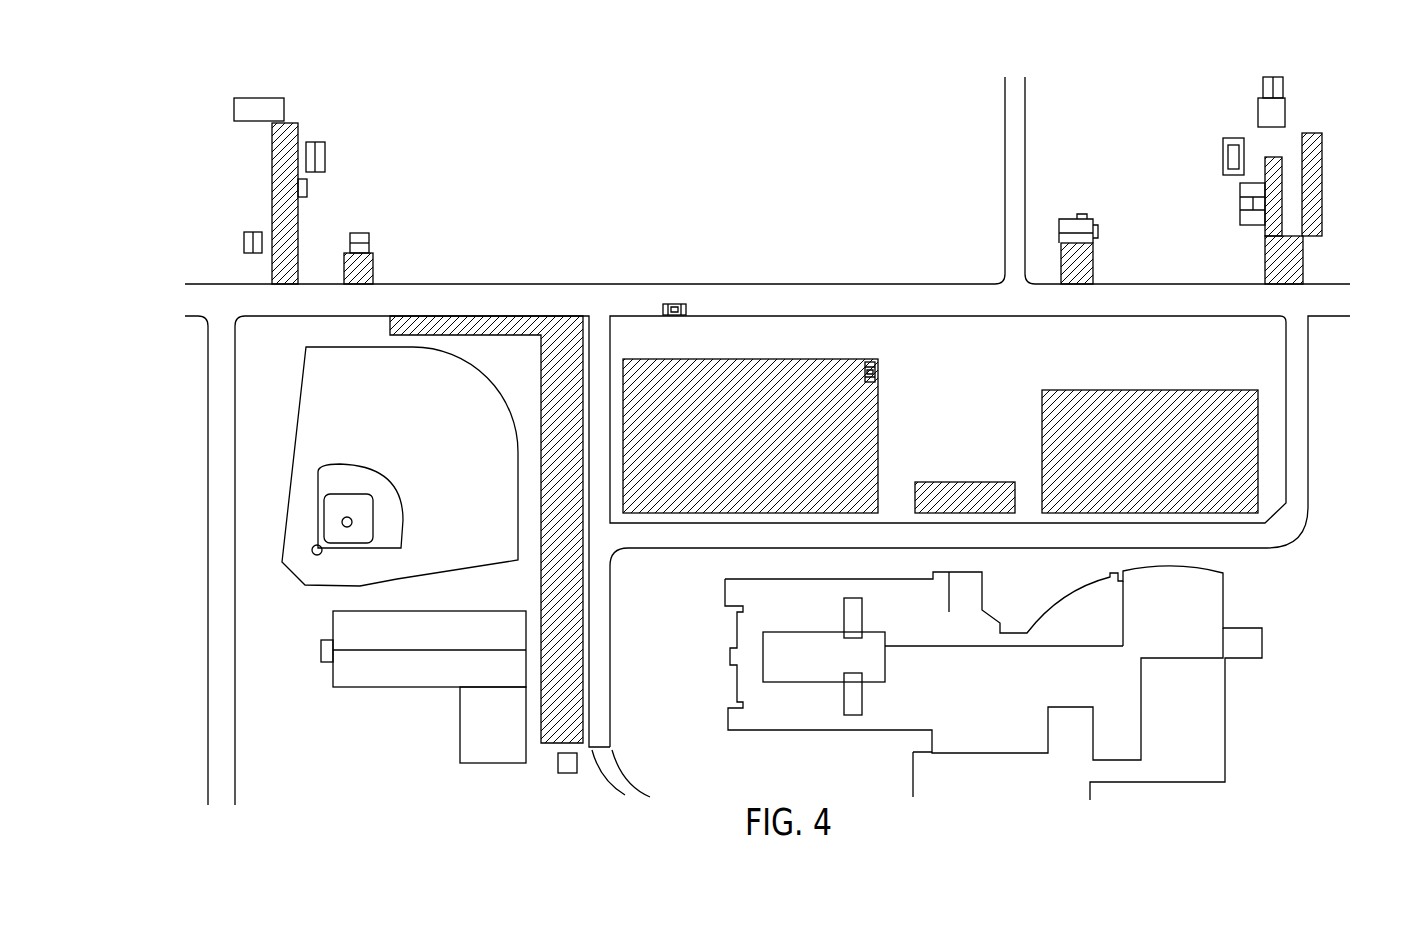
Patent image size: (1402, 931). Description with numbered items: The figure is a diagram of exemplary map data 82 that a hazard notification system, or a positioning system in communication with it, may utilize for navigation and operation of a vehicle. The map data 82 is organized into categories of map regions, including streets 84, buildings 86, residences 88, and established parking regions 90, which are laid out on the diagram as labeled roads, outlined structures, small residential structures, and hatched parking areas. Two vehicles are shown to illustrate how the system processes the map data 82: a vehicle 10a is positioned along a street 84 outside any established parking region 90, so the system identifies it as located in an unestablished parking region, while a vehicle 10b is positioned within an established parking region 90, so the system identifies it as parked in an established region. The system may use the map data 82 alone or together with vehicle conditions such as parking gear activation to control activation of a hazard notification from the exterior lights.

The map data 82 is at (1103, 58).
The streets 84 is at (1020, 212).
The buildings 86 is at (1010, 697).
The residences 88 is at (323, 154).
The established parking regions 90 is at (298, 227).
The vehicle 10a is at (672, 302).
The vehicle 10b is at (877, 372).